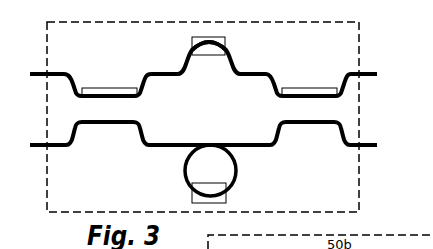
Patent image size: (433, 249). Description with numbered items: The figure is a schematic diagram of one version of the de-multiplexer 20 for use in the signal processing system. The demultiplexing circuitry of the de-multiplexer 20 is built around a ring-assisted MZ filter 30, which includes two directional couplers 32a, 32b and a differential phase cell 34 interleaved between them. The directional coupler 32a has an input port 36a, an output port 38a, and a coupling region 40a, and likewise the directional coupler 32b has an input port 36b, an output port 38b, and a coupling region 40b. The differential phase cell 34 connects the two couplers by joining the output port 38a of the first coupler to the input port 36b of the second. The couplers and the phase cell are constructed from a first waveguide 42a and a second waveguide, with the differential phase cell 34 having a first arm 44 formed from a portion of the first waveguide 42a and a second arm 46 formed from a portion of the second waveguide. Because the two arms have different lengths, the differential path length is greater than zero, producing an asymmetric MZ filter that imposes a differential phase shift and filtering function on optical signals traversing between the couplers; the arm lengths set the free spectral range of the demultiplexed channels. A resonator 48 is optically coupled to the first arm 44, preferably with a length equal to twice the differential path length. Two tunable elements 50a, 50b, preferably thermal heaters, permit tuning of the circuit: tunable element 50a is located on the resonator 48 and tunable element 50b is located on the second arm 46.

The de-multiplexer 20 is at (367, 42).
The ring-assisted MZ filter 30 is at (194, 61).
The directional coupler 32a is at (120, 151).
The directional coupler 32b is at (293, 151).
The differential phase cell 34 is at (231, 50).
The input port 36a is at (78, 86).
The input port 36b is at (282, 86).
The output port 38a is at (140, 86).
The output port 38b is at (341, 86).
The coupling region 40a is at (108, 87).
The coupling region 40b is at (308, 87).
The first waveguide 42a is at (145, 150).
The first arm 44 is at (271, 147).
The second arm 46 is at (232, 59).
The resonator 48 is at (184, 173).
The tunable element 50a is at (192, 198).
The tunable element 50b is at (192, 44).